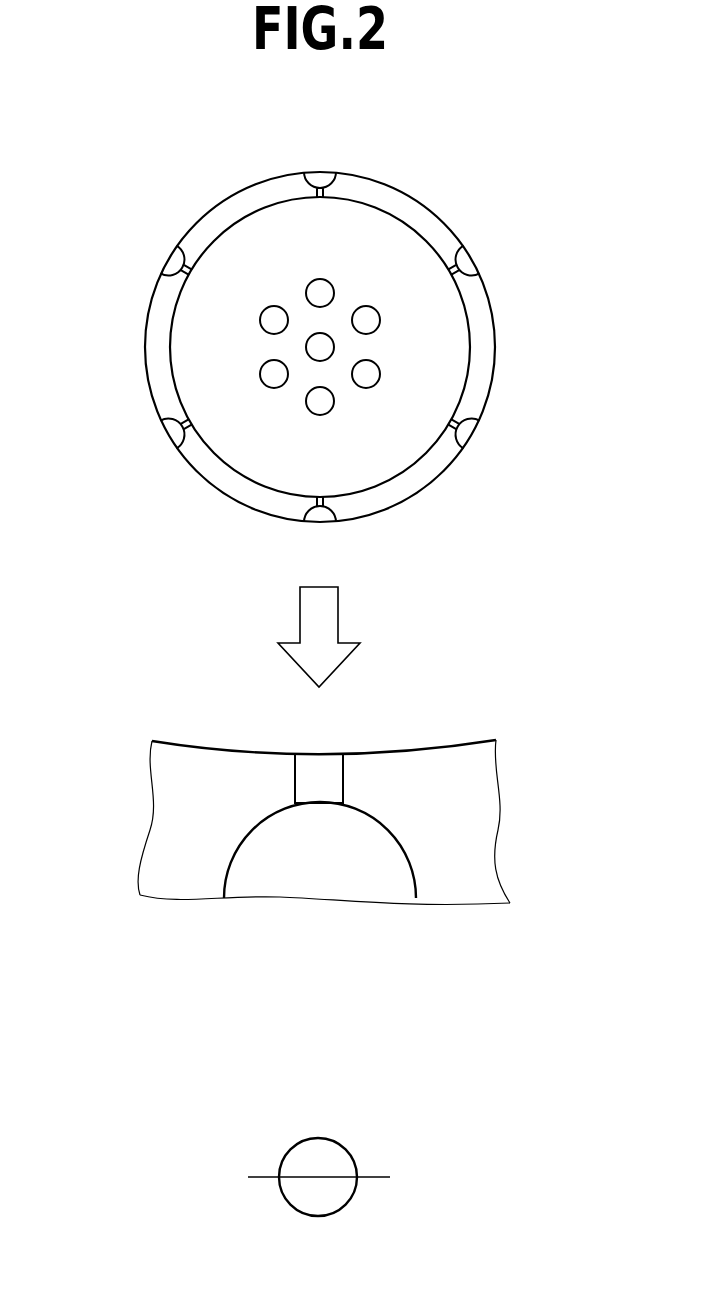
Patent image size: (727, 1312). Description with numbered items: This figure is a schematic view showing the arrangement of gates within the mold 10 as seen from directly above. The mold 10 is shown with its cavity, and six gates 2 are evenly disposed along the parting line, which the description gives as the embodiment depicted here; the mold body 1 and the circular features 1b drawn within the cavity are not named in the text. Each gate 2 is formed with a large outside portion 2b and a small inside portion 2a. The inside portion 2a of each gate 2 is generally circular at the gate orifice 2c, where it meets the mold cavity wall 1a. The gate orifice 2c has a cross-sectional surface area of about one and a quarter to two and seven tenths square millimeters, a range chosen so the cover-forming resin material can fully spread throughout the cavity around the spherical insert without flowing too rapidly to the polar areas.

The mold 10 is at (503, 217).
The disc body 1 is at (370, 270).
The mold cavity wall 1a is at (246, 750).
The through holes 1b is at (318, 401).
The gate 2 is at (463, 263).
The inside portion 2a is at (327, 784).
The outside portion 2b is at (410, 866).
The gate orifice 2c is at (338, 1142).